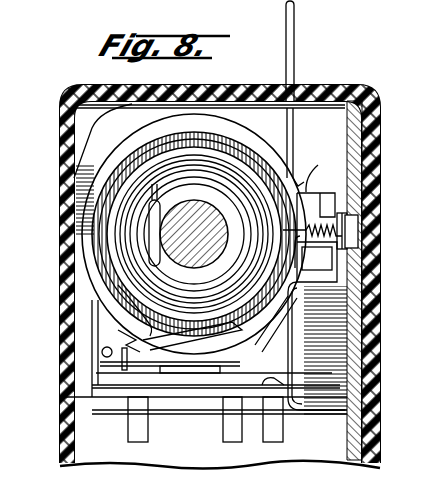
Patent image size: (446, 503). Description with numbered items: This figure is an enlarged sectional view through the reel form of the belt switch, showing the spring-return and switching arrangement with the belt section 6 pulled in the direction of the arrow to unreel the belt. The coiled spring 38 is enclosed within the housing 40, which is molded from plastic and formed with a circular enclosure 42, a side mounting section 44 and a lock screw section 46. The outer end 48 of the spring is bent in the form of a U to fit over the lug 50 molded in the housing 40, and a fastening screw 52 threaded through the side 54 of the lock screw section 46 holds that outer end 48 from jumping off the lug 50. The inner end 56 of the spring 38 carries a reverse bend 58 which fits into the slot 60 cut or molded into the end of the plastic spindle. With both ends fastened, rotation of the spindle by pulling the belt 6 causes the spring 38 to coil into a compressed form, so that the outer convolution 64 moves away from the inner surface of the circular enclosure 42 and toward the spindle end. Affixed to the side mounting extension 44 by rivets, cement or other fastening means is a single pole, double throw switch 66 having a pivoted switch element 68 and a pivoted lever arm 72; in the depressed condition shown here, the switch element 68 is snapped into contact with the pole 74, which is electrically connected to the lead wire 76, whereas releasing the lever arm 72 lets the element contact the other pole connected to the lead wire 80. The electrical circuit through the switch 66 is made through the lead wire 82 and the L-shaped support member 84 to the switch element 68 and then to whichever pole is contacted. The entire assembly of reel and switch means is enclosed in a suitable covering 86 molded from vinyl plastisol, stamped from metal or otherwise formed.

The belt section 6 is at (295, 60).
The covering 86 is at (332, 93).
The housing 40 is at (293, 178).
The lock screw section 46 is at (314, 186).
The side 54 is at (344, 198).
The fastening screw 52 is at (313, 232).
The coiled spring 38 is at (257, 199).
The circular enclosure 42 is at (287, 214).
The outer end 48 is at (307, 241).
The lug 50 is at (317, 237).
The inner end 56 is at (152, 184).
The reverse bend 58 is at (160, 218).
The slot 60 is at (144, 258).
The outer convolution 64 is at (146, 310).
The pole 74 is at (306, 316).
The pivoted lever arm 72 is at (179, 335).
The pivoted switch element 68 is at (170, 355).
The mounting section 44 is at (276, 340).
The L-shaped support member 84 is at (127, 375).
The single pole, double throw switch 66 is at (188, 388).
The lead wire 82 is at (138, 442).
The lead wire 80 is at (232, 442).
The lead wire 76 is at (273, 442).